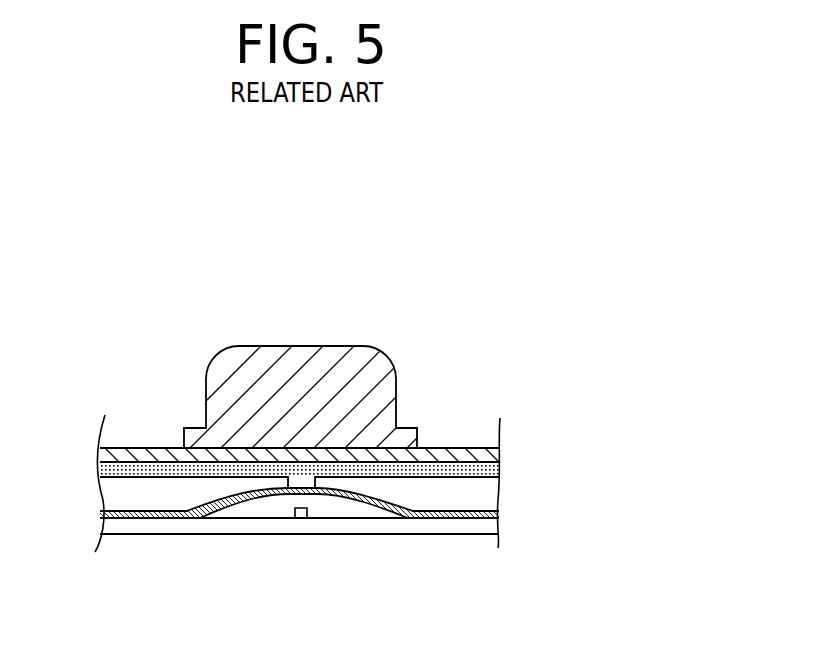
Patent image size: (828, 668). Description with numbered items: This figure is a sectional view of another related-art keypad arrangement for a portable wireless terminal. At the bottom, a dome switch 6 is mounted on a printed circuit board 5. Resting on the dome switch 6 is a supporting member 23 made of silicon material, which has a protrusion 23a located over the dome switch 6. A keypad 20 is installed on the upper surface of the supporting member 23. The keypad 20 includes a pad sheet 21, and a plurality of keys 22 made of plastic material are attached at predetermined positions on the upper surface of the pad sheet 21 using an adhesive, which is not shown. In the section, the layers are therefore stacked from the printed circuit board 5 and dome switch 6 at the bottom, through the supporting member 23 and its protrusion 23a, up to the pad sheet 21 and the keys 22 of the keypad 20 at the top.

The keypad 20 is at (426, 337).
The pad sheet 21 is at (440, 455).
The keys 22 is at (225, 372).
The supporting member 23 is at (147, 468).
The protrusion 23a is at (252, 496).
The dome switch 6 is at (324, 492).
The printed circuit board 5 is at (446, 523).